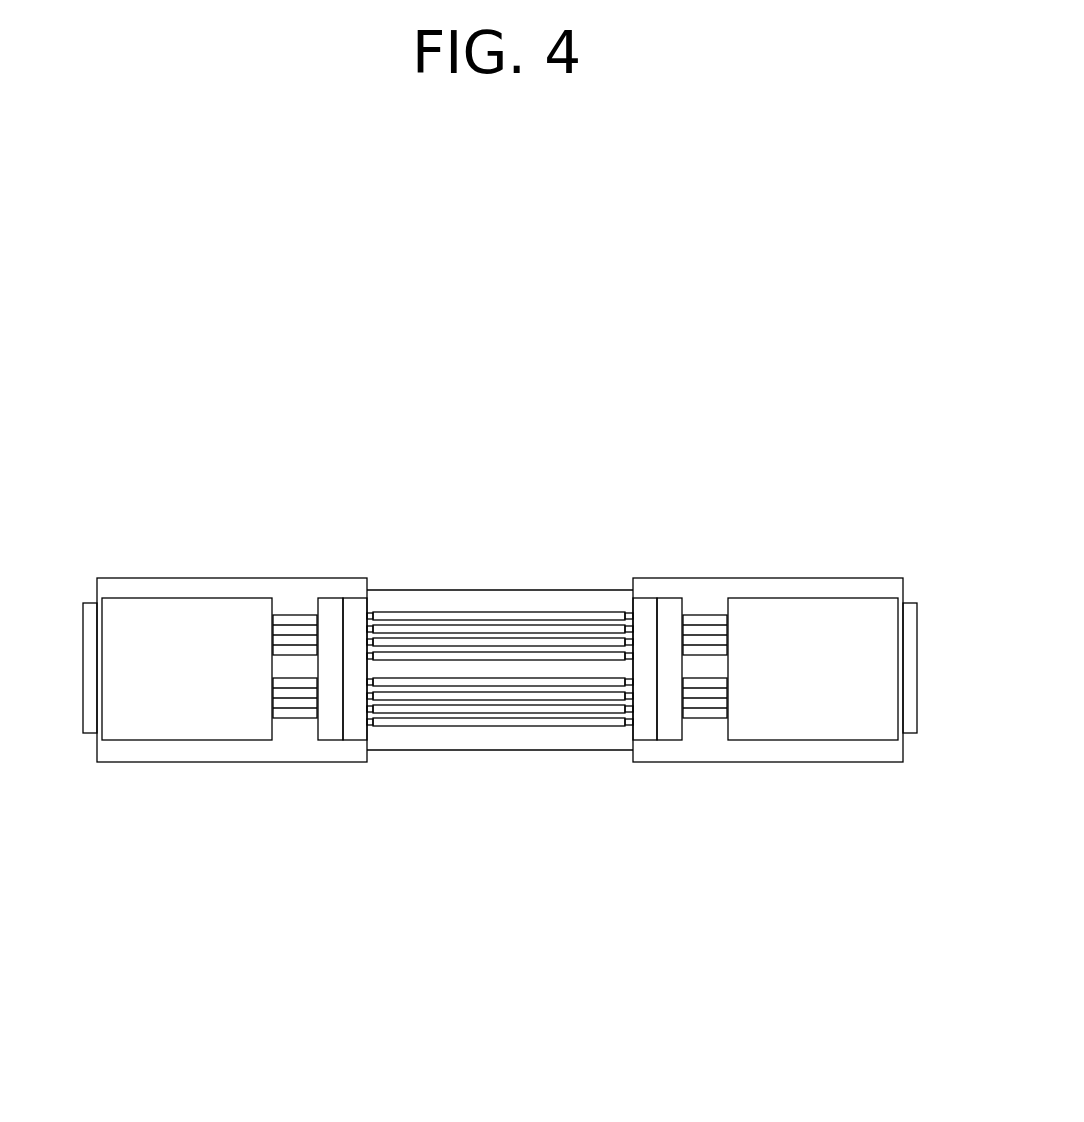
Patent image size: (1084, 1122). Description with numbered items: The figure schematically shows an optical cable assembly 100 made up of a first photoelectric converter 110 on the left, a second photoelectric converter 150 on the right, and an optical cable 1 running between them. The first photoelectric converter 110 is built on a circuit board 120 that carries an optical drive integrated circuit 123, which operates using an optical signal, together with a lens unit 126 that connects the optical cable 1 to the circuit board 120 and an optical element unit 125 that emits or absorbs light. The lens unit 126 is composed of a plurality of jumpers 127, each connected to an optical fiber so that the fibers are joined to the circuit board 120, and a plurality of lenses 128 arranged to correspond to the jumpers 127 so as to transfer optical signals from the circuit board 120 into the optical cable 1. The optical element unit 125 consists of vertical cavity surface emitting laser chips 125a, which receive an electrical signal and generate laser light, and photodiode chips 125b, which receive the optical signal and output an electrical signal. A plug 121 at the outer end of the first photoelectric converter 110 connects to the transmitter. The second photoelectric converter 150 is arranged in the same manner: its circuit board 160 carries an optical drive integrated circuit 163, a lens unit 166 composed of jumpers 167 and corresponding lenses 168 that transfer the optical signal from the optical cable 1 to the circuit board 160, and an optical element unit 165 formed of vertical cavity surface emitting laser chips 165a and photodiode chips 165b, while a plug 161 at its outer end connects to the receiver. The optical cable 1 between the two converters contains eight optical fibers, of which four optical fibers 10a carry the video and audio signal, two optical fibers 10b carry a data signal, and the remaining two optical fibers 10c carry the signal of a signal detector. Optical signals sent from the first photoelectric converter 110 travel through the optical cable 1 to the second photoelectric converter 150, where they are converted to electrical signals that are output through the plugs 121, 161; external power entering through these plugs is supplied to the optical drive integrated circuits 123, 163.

The optical cable assembly 100 is at (654, 330).
The optical cable 1 is at (489, 519).
The optical fibers for transferring a video signal 10a is at (572, 655).
The optical fibers for transmitting a data signal 10b is at (439, 695).
The optical fibers for transmitting a signal detector signal 10c is at (574, 722).
The first photoelectric converter 110 is at (102, 557).
The circuit board 120 is at (193, 762).
The plug 121 is at (90, 727).
The optical drive integrated circuit 123 is at (140, 728).
The optical element unit 125 is at (312, 813).
The vertical cavity surface emitting laser chips 125a is at (312, 618).
The photodiode chips 125b is at (310, 713).
The lens unit 126 is at (363, 462).
The jumpers 127 is at (360, 598).
The lenses 128 is at (322, 598).
The second photoelectric converter 150 is at (898, 557).
The circuit board 160 is at (803, 762).
The plug 161 is at (913, 727).
The optical drive integrated circuit 163 is at (865, 728).
The optical element unit 165 is at (735, 848).
The vertical cavity surface emitting laser chips 165a is at (700, 700).
The photodiode chips 165b is at (720, 645).
The lens unit 166 is at (682, 485).
The jumpers 167 is at (642, 598).
The lenses 168 is at (677, 598).